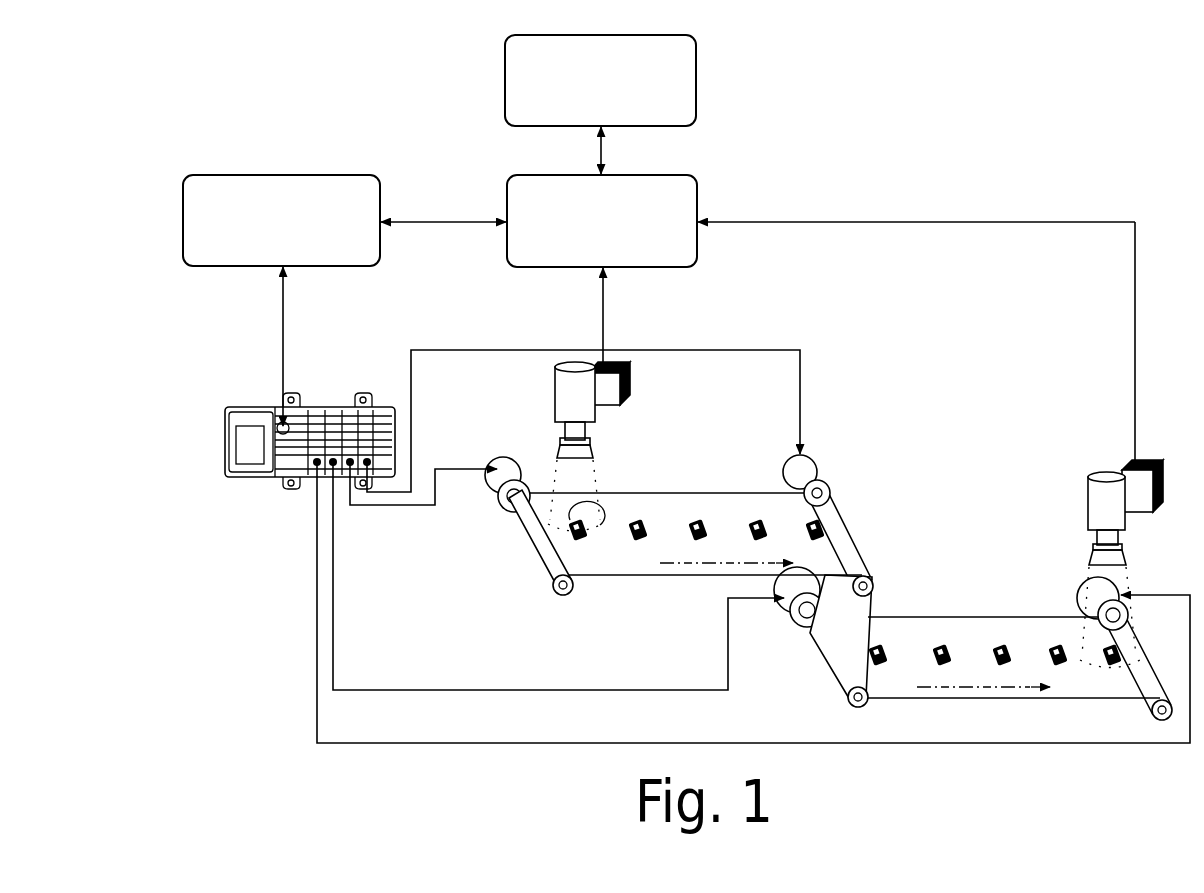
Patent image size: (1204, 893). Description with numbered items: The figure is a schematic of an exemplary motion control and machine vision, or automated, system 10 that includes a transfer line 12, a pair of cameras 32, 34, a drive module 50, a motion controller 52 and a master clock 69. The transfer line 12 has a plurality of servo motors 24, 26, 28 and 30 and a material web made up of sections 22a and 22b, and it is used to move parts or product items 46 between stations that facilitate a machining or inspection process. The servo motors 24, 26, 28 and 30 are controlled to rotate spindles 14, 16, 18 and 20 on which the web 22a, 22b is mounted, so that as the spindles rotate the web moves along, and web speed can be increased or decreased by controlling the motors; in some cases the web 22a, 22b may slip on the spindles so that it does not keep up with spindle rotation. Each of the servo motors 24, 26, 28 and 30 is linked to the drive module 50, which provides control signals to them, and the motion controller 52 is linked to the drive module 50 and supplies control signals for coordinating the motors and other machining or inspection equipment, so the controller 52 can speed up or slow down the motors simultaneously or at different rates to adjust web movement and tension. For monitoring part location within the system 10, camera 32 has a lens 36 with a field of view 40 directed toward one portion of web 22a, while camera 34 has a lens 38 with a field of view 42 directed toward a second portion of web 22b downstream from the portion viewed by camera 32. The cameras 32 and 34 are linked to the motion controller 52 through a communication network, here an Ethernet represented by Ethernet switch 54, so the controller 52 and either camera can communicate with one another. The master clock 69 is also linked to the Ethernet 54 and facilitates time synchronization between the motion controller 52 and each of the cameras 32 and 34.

The automated system 10 is at (806, 159).
The transfer line 12 is at (957, 426).
The spindle 14 is at (560, 595).
The spindle 16 is at (873, 584).
The spindle 18 is at (857, 706).
The spindle 20 is at (1151, 719).
The web section 22a is at (648, 492).
The web section 22b is at (912, 630).
The servo motor 24 is at (496, 506).
The servo motor 26 is at (832, 456).
The servo motor 28 is at (800, 588).
The servo motor 30 is at (1095, 590).
The camera 32 is at (637, 405).
The camera 34 is at (1130, 497).
The lens 36 is at (562, 430).
The lens 38 is at (1100, 536).
The field of view 40 is at (556, 520).
The field of view 42 is at (1086, 650).
The product items 46 is at (686, 535).
The drive module 50 is at (307, 402).
The motion controller 52 is at (183, 222).
The Ethernet switch 54 is at (697, 262).
The master clock 69 is at (505, 78).